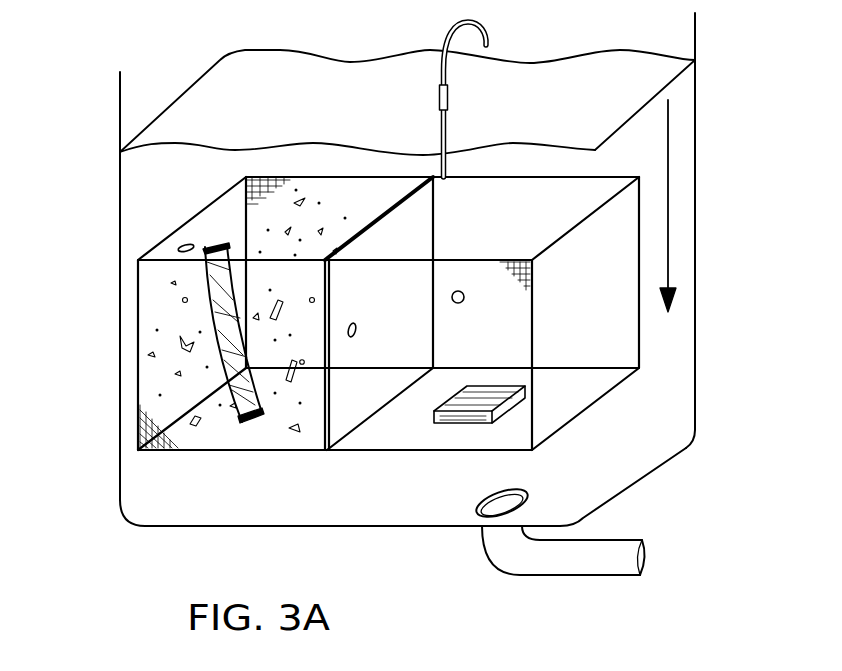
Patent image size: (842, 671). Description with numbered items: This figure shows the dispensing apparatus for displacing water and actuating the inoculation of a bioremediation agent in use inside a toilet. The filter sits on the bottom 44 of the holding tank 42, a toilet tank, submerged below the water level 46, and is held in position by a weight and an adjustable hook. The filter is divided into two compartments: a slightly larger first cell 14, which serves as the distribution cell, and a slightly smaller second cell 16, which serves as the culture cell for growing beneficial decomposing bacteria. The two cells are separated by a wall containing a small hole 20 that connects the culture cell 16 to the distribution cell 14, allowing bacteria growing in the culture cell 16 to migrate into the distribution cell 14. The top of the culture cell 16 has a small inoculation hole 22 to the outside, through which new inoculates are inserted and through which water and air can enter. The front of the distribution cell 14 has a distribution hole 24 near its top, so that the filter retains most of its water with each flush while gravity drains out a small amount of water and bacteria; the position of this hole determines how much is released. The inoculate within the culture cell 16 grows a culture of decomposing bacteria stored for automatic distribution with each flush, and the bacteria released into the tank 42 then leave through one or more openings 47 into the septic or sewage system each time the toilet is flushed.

The first cell 14 is at (497, 220).
The second cell 16 is at (302, 205).
The hole 20 is at (358, 333).
The inoculation hole 22 is at (178, 247).
The distribution hole 24 is at (464, 302).
The holding tank 42 is at (697, 250).
The bottom 44 is at (210, 526).
The water level 46 is at (120, 152).
The openings 47 is at (478, 512).